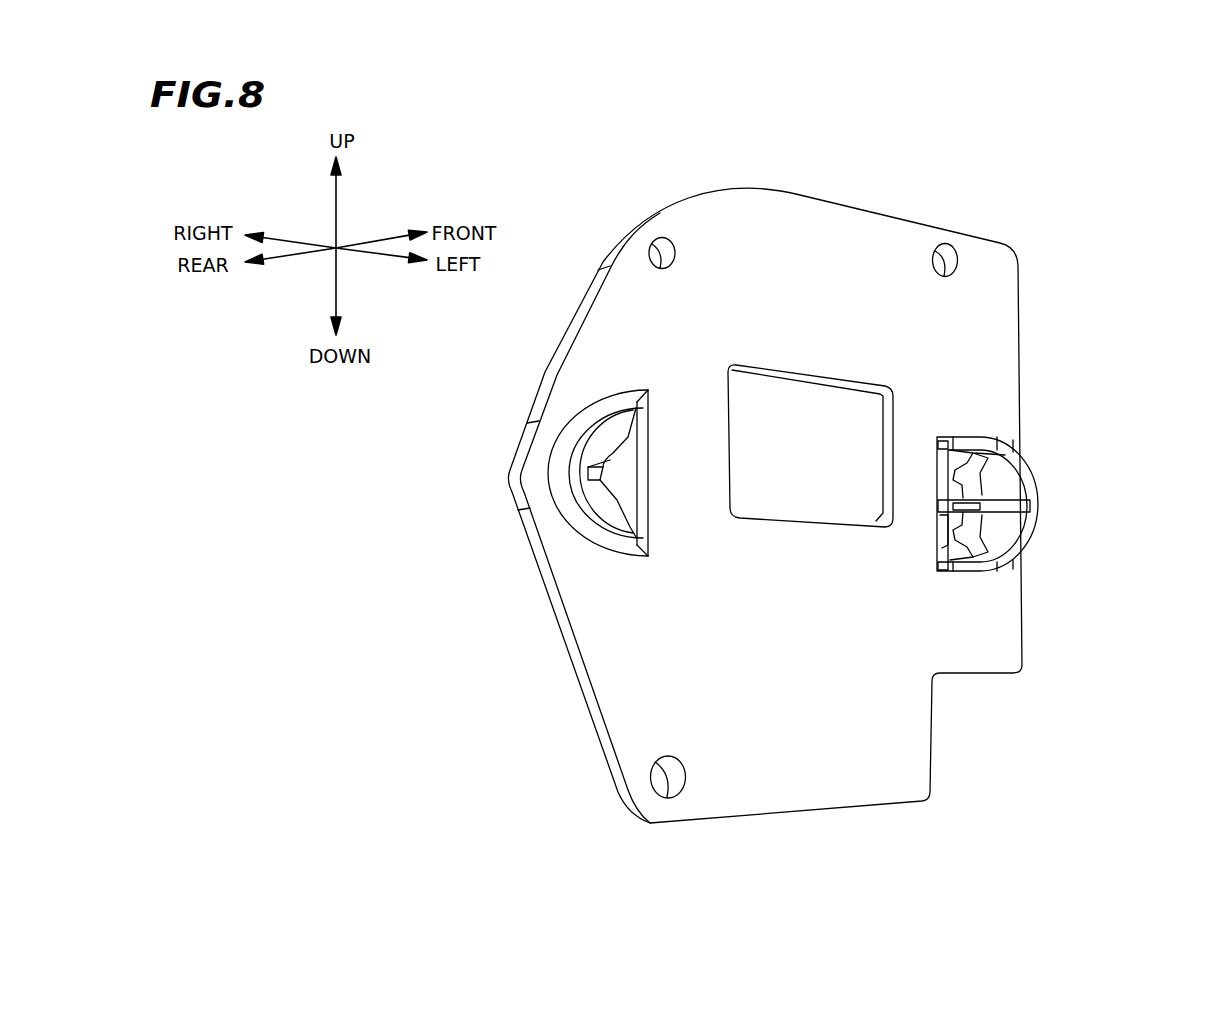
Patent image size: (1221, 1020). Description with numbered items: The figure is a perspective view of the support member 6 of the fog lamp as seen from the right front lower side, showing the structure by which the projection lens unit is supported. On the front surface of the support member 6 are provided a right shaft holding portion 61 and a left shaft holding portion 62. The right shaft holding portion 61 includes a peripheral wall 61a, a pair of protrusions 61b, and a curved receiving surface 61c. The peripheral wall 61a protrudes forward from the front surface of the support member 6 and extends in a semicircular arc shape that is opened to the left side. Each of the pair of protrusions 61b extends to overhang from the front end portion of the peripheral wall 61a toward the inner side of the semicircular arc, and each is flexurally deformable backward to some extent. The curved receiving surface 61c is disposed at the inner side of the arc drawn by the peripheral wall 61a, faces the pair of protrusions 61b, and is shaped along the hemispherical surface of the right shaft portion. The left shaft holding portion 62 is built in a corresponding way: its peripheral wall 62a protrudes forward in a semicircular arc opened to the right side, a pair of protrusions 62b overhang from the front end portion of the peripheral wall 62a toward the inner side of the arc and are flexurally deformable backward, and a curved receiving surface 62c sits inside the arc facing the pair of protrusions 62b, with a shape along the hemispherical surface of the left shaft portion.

The support member 6 is at (862, 233).
The right shaft holding portion 61 is at (562, 517).
The peripheral wall 61a is at (557, 473).
The pair of protrusions 61b is at (605, 428).
The curved receiving surface 61c is at (627, 478).
The left shaft holding portion 62 is at (999, 558).
The peripheral wall 62a is at (1035, 502).
The pair of protrusions 62b is at (1005, 470).
The curved receiving surface 62c is at (947, 525).